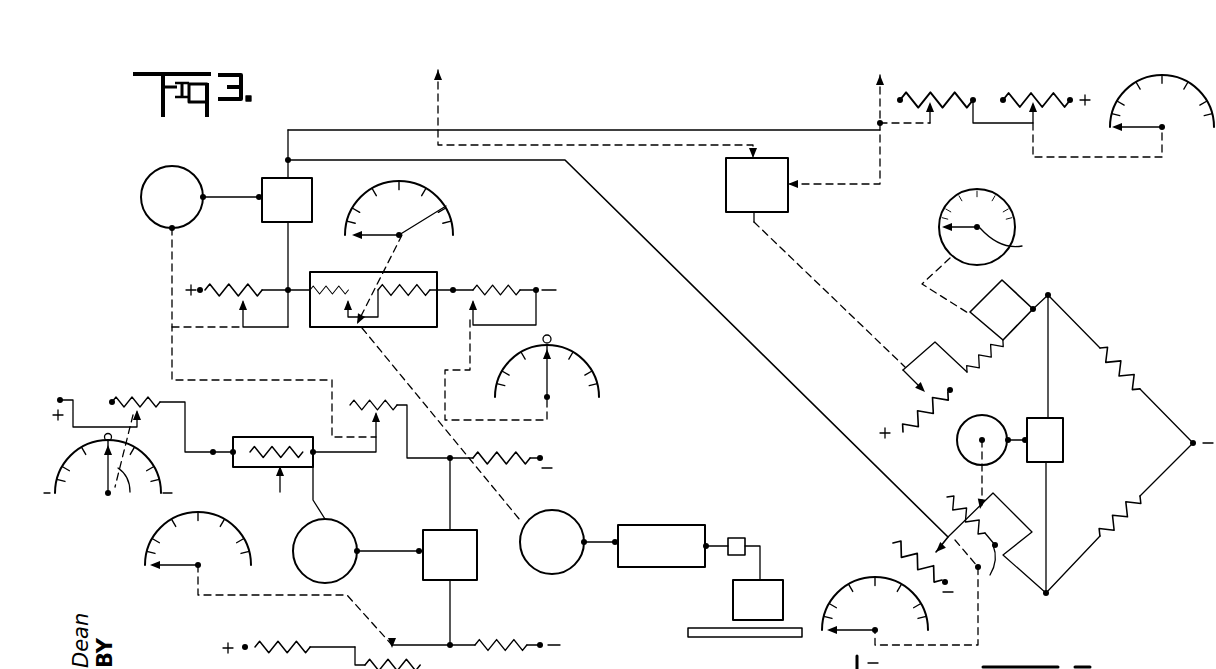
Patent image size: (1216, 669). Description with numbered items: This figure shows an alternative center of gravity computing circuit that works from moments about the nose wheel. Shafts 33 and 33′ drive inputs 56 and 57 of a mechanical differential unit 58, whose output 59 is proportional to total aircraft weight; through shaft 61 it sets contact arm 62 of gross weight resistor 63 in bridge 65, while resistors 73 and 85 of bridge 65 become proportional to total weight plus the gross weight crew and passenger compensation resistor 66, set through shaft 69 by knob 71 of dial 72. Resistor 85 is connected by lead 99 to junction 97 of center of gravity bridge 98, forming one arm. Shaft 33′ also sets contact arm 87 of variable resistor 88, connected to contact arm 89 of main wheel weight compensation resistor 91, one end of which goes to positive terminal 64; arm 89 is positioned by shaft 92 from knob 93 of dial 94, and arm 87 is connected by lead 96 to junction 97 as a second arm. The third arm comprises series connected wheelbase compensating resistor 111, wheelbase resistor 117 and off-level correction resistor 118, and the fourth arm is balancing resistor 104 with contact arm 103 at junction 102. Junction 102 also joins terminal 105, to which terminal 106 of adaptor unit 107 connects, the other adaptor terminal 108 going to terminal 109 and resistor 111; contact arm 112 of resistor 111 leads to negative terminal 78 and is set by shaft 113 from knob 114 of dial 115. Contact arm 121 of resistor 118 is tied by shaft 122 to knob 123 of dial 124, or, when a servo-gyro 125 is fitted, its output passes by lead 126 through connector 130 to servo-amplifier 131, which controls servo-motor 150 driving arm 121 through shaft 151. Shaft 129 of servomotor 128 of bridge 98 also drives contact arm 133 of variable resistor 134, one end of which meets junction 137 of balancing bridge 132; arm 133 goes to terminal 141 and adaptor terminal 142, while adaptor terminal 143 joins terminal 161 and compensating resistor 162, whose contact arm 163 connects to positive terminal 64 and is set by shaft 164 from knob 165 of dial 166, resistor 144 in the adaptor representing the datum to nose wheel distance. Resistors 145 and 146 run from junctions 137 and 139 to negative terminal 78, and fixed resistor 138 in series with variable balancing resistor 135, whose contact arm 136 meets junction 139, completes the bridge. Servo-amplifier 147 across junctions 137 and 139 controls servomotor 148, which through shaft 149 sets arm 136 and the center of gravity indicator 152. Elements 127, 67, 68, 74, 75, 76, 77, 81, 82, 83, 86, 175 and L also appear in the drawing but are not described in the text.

The servomotor 128 is at (140, 188).
The amplifier 127 is at (262, 180).
The junction 97 is at (286, 148).
The lead 96 is at (665, 128).
The lead 99 is at (768, 358).
The shaft 33 is at (440, 102).
The input 56 is at (756, 156).
The mechanical differential unit 58 is at (726, 180).
The input 57 is at (790, 190).
The shaft 33′ is at (878, 101).
The output 59 is at (750, 216).
The shaft 61 is at (805, 268).
The balancing resistor 104 is at (226, 286).
The junction 102 is at (285, 288).
The contact arm 103 is at (240, 309).
The shaft 129 is at (170, 280).
The center of gravity bridge 98 is at (160, 248).
The terminal 105 is at (301, 285).
The terminal 106 is at (320, 283).
The contact arm 121 is at (350, 322).
The adaptor unit 107 is at (430, 271).
The off-level correction resistor 118 is at (320, 304).
The wheelbase resistor 117 is at (381, 322).
The terminal 108 is at (472, 298).
The terminal 109 is at (471, 288).
The wheelbase compensating variable resistor 111 is at (546, 280).
The contact arm 112 is at (479, 305).
The dial 124 is at (432, 197).
The knob 123 is at (446, 210).
The shaft 122 is at (405, 240).
The contact arm 87 is at (935, 127).
The variable resistor 88 is at (931, 98).
The contact arm 89 is at (1035, 126).
The main wheel weight crew and passenger compensation resistor 91 is at (1016, 97).
The positive terminal 64 is at (1084, 95).
The shaft 92 is at (1112, 160).
The dial 94 is at (1162, 103).
The knob 93 is at (1168, 132).
The dial 72 is at (940, 226).
The knob 71 is at (1019, 245).
The shaft 69 is at (918, 286).
The link 67 is at (960, 321).
The gross weight crew and passenger compensation resistor 66 is at (1006, 328).
The contact arm 62 is at (916, 390).
The gross weight resistor 63 is at (900, 420).
The junction 68 is at (1050, 295).
The resistor 76 is at (1126, 364).
The bridge 65 is at (1170, 406).
The negative terminal 78 is at (1196, 455).
The resistor 77 is at (1130, 514).
The junction 75 is at (1049, 596).
The amplifier 81 is at (1063, 441).
The motor 82 is at (990, 414).
The shaft 83 is at (985, 472).
The potentiometer 74 is at (959, 495).
The variable resistor 85 is at (895, 547).
The resistor 73 is at (980, 571).
The indicator 86 is at (836, 640).
The indicator 175 is at (899, 659).
The compensating variable resistor 162 is at (131, 388).
The contact arm 163 is at (138, 416).
The shaft 164 is at (112, 500).
The knob 165 is at (104, 500).
The dial 166 is at (152, 458).
The resistor 144 is at (283, 437).
The terminal 161 is at (213, 458).
The terminal 143 is at (234, 462).
The terminal 142 is at (313, 498).
The terminal 141 is at (317, 466).
The variable resistor 134 is at (378, 401).
The contact arm 133 is at (385, 416).
The resistor 145 is at (522, 453).
The junction 137 is at (455, 464).
The shaft 151 is at (512, 488).
The dial 115 is at (590, 365).
The knob 114 is at (553, 402).
The shaft 113 is at (551, 424).
The center of gravity indicator 152 is at (185, 570).
The shaft 149 is at (350, 602).
The contact arm 136 is at (420, 628).
The variable balancing resistor 135 is at (356, 656).
The fixed resistor 138 is at (296, 632).
The junction 139 is at (456, 640).
The resistor 146 is at (510, 640).
The servomotor 148 is at (348, 534).
The servo-amplifier 147 is at (460, 568).
The balancing circuit 132 is at (568, 505).
The servo-motor 150 is at (570, 570).
The servo-amplifier 131 is at (660, 525).
The connector 130 is at (738, 538).
The lead 126 is at (762, 553).
The servo-gyro 125 is at (733, 596).
The load bar L is at (688, 632).